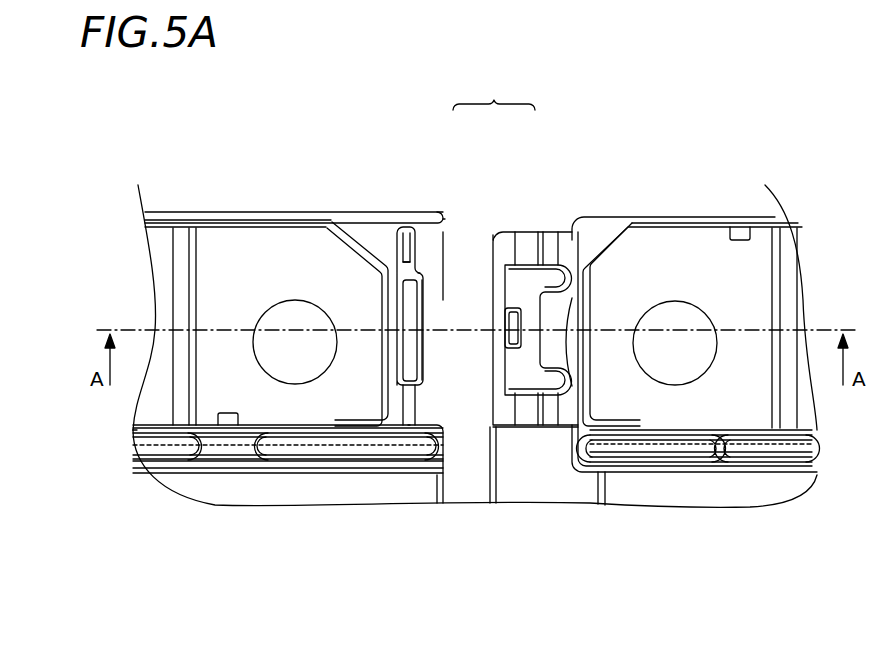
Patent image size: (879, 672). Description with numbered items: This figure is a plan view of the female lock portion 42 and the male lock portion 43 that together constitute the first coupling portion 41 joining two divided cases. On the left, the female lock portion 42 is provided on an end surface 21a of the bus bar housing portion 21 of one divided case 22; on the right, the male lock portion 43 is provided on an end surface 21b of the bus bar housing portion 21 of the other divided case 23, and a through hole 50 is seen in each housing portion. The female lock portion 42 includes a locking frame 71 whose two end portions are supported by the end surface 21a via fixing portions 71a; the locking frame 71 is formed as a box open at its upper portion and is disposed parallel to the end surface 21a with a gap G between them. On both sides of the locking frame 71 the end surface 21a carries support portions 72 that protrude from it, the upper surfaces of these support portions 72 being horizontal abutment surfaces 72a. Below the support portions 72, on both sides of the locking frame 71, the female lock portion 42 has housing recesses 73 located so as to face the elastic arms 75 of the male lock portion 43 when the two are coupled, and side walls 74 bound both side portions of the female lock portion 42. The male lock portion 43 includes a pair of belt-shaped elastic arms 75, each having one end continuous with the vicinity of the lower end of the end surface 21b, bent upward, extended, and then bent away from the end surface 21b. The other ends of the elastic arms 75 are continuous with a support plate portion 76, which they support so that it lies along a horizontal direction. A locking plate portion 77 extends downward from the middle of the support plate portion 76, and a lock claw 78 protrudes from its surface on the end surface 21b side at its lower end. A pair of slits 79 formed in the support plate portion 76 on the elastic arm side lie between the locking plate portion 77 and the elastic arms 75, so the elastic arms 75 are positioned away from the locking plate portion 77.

The bus bar housing portion 21 is at (245, 210).
The end surface 21a is at (395, 368).
The end surface 21b is at (567, 340).
The divided case 22 is at (214, 205).
The divided case 23 is at (721, 205).
The first coupling portion 41 is at (494, 91).
The female lock portion 42 is at (443, 253).
The male lock portion 43 is at (508, 212).
The through hole 50 is at (222, 270).
The locking frame 71 is at (424, 307).
The fixing portions 71a is at (398, 282).
The support portions 72 is at (409, 230).
The abutment surfaces 72a is at (402, 228).
The housing recesses 73 is at (416, 228).
The side walls 74 is at (441, 232).
The elastic arms 75 is at (548, 232).
The support plate portion 76 is at (494, 430).
The locking plate portion 77 is at (492, 347).
The lock claw 78 is at (505, 328).
The slits 79 is at (516, 232).
The gap G is at (335, 215).